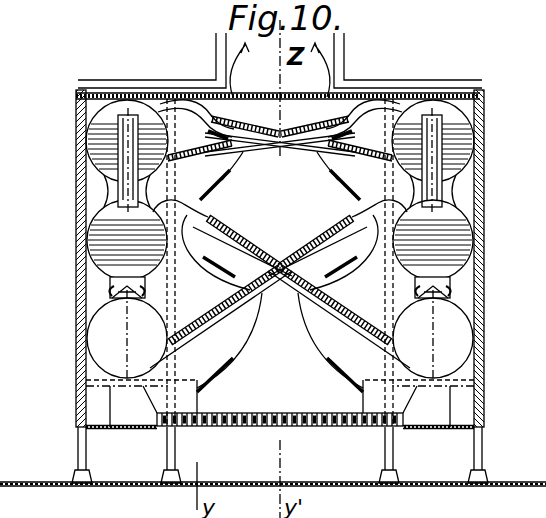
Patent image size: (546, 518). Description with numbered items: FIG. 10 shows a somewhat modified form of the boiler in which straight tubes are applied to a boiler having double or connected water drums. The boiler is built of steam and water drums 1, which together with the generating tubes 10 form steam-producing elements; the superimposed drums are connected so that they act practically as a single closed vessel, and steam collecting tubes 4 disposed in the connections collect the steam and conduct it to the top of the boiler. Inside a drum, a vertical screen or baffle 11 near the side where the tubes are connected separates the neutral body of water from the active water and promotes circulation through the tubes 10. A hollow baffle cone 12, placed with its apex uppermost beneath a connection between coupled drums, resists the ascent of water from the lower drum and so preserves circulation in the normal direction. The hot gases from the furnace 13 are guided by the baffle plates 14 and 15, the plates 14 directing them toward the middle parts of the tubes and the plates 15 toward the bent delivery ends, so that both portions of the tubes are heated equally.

The steam and water drum 1 is at (466, 231).
The steam collecting tube 4 is at (440, 150).
The generating tube 10 is at (326, 240).
The vertical screen or baffle 11 is at (84, 153).
The baffle cone 12 is at (427, 312).
The furnace 13 is at (263, 427).
The baffle plate 14 is at (221, 316).
The baffle plate 15 is at (238, 236).